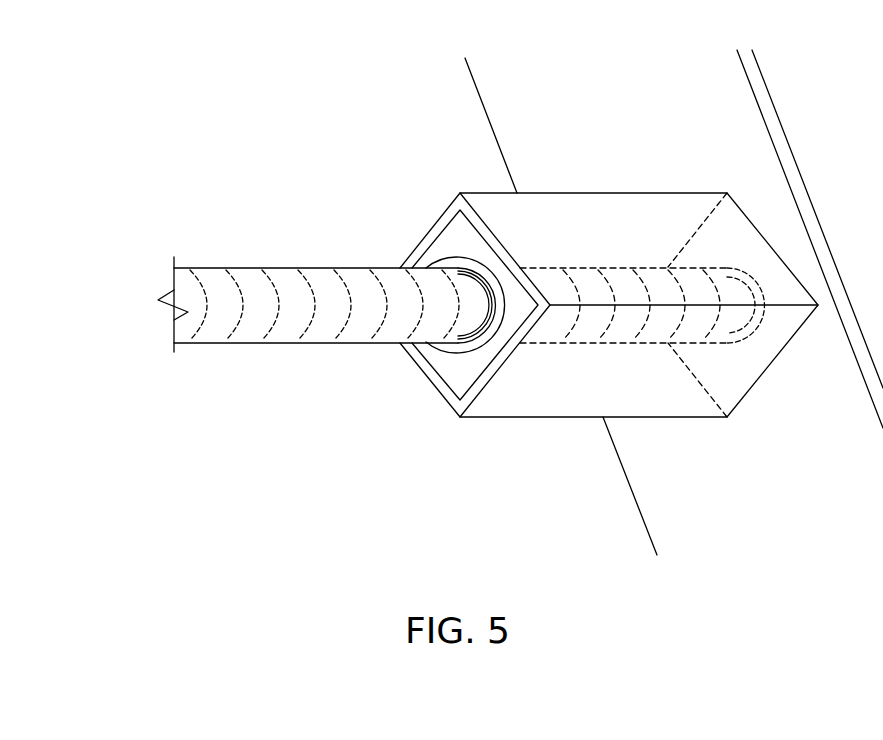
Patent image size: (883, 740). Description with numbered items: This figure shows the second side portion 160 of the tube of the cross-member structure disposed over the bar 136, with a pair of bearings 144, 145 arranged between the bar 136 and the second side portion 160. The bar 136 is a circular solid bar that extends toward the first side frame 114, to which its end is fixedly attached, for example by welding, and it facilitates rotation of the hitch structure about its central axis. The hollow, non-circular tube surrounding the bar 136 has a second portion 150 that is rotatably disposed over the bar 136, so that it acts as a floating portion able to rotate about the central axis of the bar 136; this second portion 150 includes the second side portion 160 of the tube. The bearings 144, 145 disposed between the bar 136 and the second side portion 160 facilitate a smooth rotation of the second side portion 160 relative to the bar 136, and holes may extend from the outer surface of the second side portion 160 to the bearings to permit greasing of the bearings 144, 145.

The first side frame 114 is at (773, 120).
The bar 136 is at (595, 300).
The bearing 144 is at (450, 262).
The bearing 145 is at (747, 270).
The second portion 150 is at (523, 393).
The second side portion 160 is at (497, 200).